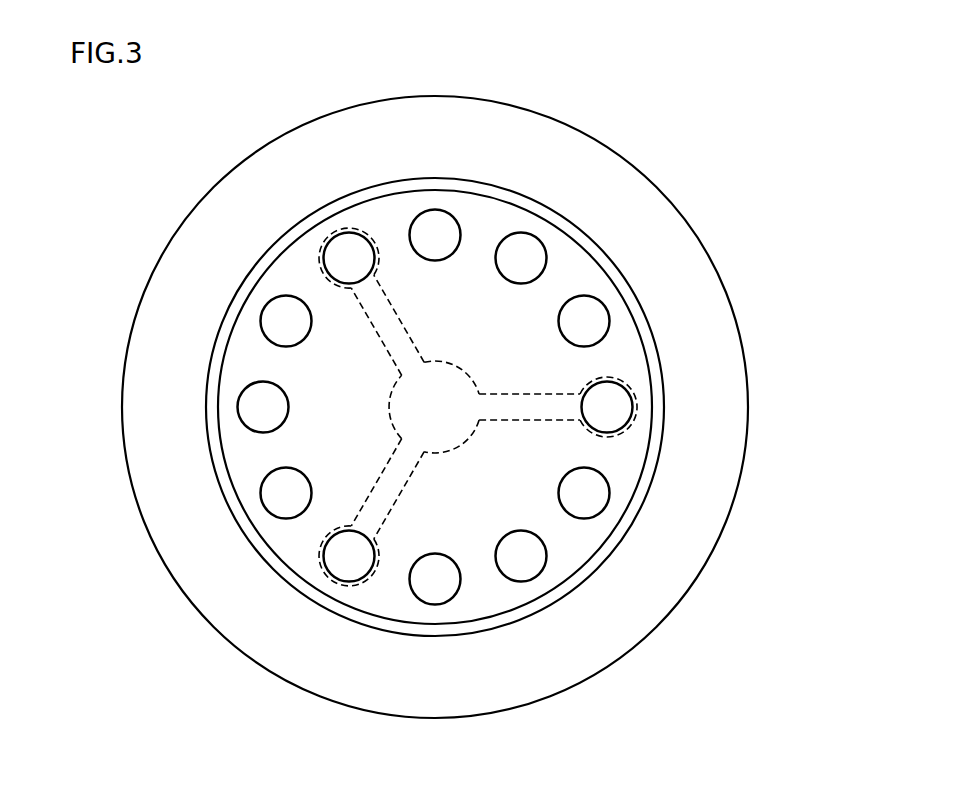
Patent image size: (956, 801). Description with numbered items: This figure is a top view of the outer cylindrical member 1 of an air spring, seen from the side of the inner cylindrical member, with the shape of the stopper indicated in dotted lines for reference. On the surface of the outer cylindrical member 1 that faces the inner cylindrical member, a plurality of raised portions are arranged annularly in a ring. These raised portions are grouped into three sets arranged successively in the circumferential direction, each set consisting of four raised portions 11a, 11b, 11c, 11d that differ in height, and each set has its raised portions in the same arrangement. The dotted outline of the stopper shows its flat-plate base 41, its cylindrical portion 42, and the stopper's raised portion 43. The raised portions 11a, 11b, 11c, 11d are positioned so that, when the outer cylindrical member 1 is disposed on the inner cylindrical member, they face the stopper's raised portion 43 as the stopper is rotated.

The outer cylindrical member 1 is at (350, 708).
The outer cylindrical member's raised portion 11a is at (330, 233).
The outer cylindrical member's raised portion 11b is at (265, 313).
The outer cylindrical member's raised portion 11c is at (238, 408).
The outer cylindrical member's raised portion 11d is at (433, 218).
The base 41 is at (457, 367).
The cylindrical portion 42 is at (395, 317).
The stopper's raised portion 43 is at (577, 388).